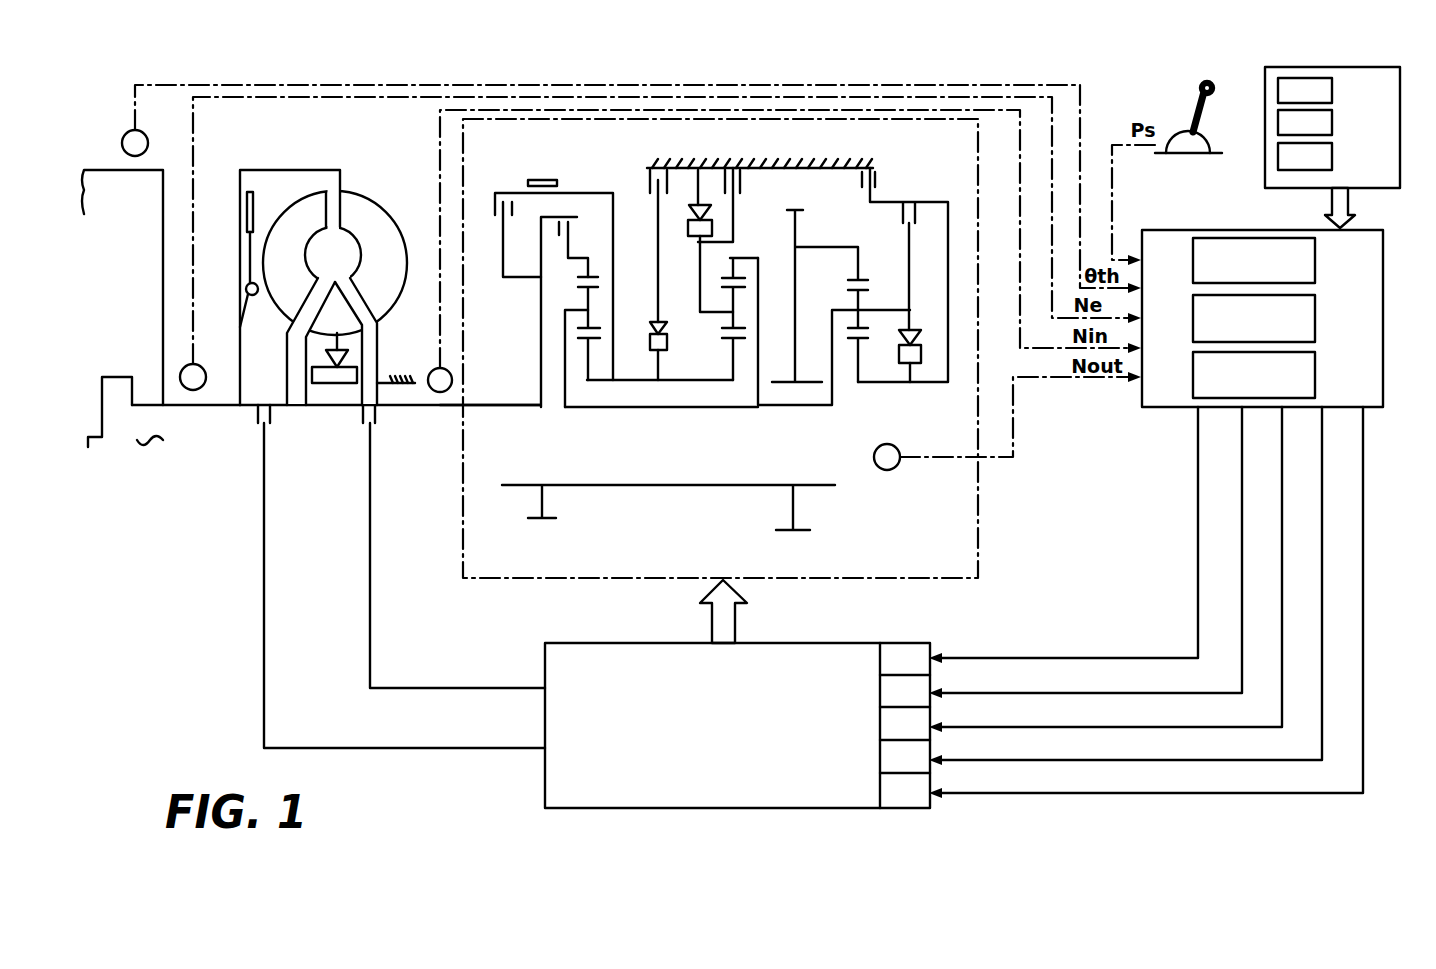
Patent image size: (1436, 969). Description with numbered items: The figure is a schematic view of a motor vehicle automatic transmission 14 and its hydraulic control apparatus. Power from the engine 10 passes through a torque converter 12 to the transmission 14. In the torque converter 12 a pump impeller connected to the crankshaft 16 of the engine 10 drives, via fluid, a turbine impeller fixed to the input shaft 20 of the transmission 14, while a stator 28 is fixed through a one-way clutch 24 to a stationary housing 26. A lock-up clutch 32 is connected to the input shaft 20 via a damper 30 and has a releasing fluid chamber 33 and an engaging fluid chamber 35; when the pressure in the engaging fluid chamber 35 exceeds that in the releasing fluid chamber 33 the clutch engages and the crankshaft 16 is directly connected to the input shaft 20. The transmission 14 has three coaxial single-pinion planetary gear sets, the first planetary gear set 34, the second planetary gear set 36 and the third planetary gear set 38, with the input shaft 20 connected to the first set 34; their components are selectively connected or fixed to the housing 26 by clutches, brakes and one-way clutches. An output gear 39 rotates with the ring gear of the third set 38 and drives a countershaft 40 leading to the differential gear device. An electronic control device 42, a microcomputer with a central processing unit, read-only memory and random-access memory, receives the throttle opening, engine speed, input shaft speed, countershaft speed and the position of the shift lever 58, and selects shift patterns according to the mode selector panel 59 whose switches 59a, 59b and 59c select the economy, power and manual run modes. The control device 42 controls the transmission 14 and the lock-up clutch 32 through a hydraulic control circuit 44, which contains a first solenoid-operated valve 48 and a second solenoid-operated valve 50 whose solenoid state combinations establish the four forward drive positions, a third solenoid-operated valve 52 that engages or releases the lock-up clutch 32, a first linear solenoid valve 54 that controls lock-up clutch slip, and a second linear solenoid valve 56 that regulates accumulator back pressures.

The engine 10 is at (122, 308).
The torque converter 12 is at (300, 290).
The automatic transmission 14 is at (907, 156).
The crankshaft 16 is at (223, 408).
The input shaft 20 is at (487, 410).
The one-way clutch 24 is at (313, 368).
The housing 26 is at (398, 376).
The stator 28 is at (320, 323).
The damper 30 is at (240, 290).
The lock-up clutch 32 is at (247, 232).
The releasing fluid chamber 33 is at (247, 402).
The first planetary gear set 34 is at (592, 402).
The engaging fluid chamber 35 is at (283, 170).
The second planetary gear set 36 is at (742, 402).
The third planetary gear set 38 is at (877, 400).
The output gear 39 is at (795, 212).
The countershaft 40 is at (683, 487).
The electronic control device 42 is at (1153, 232).
The hydraulic control circuit 44 is at (558, 797).
The first solenoid-operated valve 48 is at (913, 650).
The second solenoid-operated valve 50 is at (922, 690).
The third solenoid-operated valve 52 is at (922, 722).
The first linear solenoid valve 54 is at (922, 755).
The second linear solenoid valve 56 is at (922, 790).
The shift lever 58 is at (1208, 116).
The mode selector panel 59 is at (1308, 147).
The mode selector switch 59a is at (1332, 91).
The mode selector switch 59b is at (1332, 124).
The mode selector switch 59c is at (1332, 158).